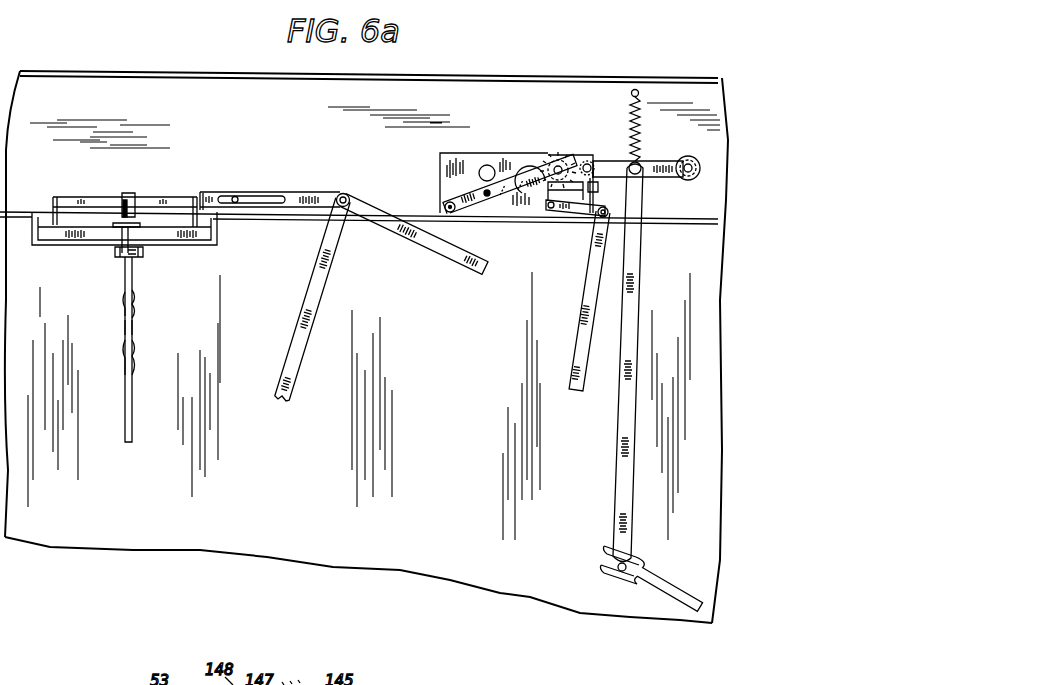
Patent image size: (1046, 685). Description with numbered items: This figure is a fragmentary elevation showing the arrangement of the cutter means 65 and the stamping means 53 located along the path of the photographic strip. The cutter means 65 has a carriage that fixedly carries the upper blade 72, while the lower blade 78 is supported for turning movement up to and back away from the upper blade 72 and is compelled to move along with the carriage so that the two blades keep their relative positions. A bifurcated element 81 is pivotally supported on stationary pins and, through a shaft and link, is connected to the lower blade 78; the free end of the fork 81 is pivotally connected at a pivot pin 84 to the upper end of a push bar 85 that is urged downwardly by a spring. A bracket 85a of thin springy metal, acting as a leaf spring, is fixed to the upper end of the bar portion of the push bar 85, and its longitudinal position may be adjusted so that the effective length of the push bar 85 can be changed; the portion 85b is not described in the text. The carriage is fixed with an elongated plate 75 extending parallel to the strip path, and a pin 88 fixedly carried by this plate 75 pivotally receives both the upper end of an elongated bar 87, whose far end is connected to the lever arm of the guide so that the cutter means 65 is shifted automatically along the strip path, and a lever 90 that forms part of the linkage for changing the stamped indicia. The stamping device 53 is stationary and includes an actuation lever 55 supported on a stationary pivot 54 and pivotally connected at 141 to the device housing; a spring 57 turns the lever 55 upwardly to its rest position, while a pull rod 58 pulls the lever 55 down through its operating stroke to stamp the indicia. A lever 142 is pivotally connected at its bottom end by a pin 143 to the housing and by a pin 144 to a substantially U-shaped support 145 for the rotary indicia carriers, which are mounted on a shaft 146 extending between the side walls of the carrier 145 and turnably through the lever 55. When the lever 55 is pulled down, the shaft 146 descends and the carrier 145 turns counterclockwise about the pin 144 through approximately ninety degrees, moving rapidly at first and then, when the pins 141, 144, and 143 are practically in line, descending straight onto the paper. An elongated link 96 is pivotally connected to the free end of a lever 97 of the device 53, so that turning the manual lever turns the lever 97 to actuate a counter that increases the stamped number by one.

The cutter means 65 is at (200, 159).
The bifurcated element 81 is at (50, 200).
The upper blade 72 is at (134, 202).
The lower blade 78 is at (118, 231).
The pivot pin 84 is at (146, 258).
The push bar 85 is at (132, 361).
The bracket 85a is at (136, 325).
The rod notches 85b is at (126, 278).
The elongated plate 75 is at (297, 192).
The pin 88 is at (347, 195).
The lever 90 is at (305, 310).
The elongated bar 87 is at (430, 246).
The stamping means 53 is at (466, 153).
The pivot 141 is at (441, 193).
The shaft 146 is at (558, 166).
The U-shaped support 145 is at (568, 154).
The pin 144 is at (594, 158).
The lever 142 is at (594, 178).
The lever 97 is at (565, 213).
The pin 143 is at (590, 216).
The elongated link 96 is at (586, 313).
The actuation lever 55 is at (654, 161).
The stationary pivot 54 is at (703, 176).
The spring 57 is at (640, 106).
The pull rod 58 is at (640, 290).